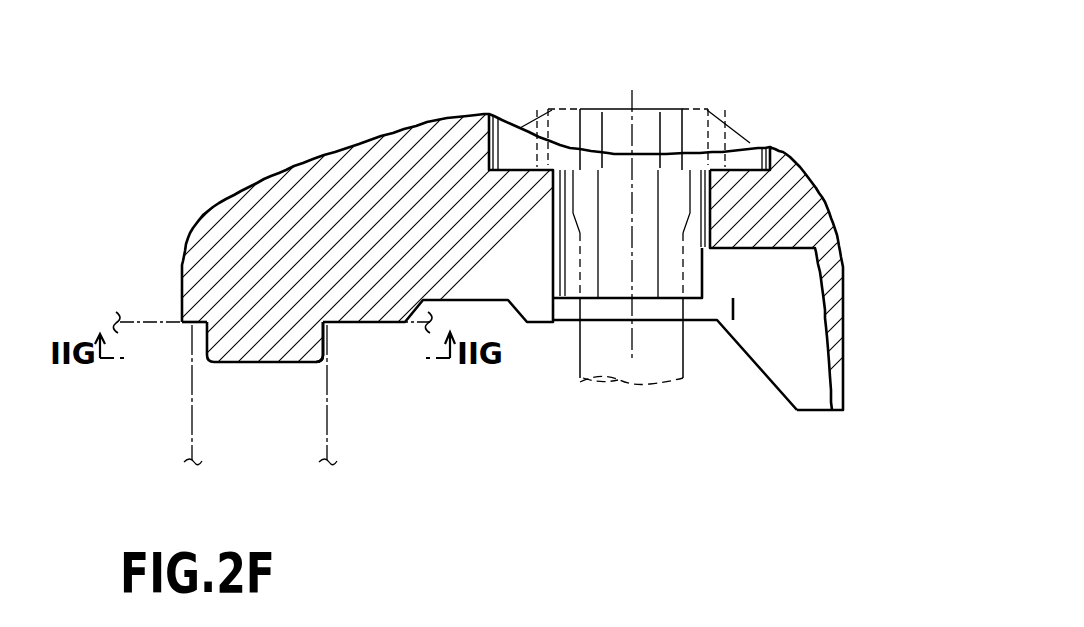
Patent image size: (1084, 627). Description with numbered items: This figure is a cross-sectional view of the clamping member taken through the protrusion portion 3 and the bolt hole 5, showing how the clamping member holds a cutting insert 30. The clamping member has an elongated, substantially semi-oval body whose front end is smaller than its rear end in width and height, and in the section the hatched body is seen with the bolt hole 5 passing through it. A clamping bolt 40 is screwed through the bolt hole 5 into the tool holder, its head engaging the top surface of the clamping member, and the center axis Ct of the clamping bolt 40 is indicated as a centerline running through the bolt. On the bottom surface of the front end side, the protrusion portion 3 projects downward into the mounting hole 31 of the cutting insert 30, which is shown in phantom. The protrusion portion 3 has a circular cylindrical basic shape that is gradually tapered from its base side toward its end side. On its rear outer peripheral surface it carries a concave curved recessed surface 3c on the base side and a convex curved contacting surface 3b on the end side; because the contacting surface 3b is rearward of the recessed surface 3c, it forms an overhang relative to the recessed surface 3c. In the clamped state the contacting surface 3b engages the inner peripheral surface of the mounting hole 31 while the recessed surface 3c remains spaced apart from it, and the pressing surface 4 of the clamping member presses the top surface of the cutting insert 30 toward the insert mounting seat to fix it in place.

The cutting insert 30 is at (141, 320).
The mounting hole 31 is at (188, 438).
The protrusion portion 3 is at (248, 352).
The contacting surface 3b is at (328, 362).
The recessed surface 3c is at (328, 325).
The pressing surface 4 is at (392, 325).
The clamping bolt 40 is at (693, 107).
The bolt hole 5 is at (705, 172).
The center axis Ct is at (630, 98).